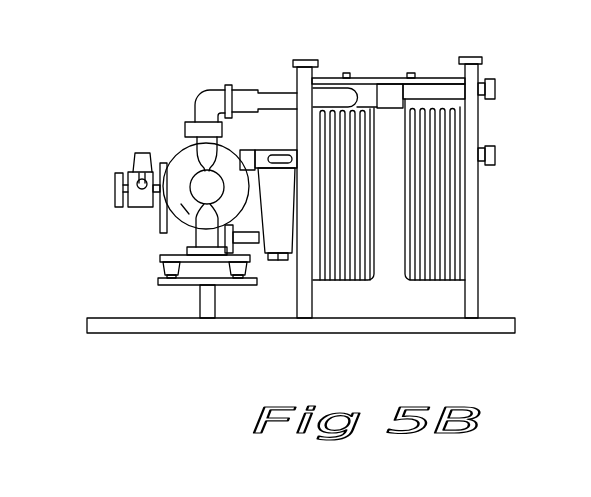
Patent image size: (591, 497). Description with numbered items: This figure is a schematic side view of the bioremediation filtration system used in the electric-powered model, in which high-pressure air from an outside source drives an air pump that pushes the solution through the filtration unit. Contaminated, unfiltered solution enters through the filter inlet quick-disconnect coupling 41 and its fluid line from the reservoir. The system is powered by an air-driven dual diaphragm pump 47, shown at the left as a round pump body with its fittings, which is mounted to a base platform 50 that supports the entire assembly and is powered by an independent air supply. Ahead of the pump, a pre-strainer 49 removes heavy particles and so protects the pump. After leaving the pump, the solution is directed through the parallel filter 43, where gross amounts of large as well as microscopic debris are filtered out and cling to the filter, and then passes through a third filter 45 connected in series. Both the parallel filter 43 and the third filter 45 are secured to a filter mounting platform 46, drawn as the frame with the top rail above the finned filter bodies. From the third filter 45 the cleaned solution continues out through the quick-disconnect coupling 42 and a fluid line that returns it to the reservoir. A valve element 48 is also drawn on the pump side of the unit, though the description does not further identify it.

The filter inlet quick-disconnect coupling 41 is at (497, 157).
The quick-disconnect coupling 42 is at (497, 89).
The parallel filter 43 is at (337, 283).
The third filter 45 is at (440, 247).
The filter mounting platform 46 is at (379, 78).
The air-driven dual diaphragm pump 47 is at (168, 213).
The valve 48 is at (135, 172).
The pre-strainer 49 is at (280, 232).
The base platform 50 is at (110, 327).